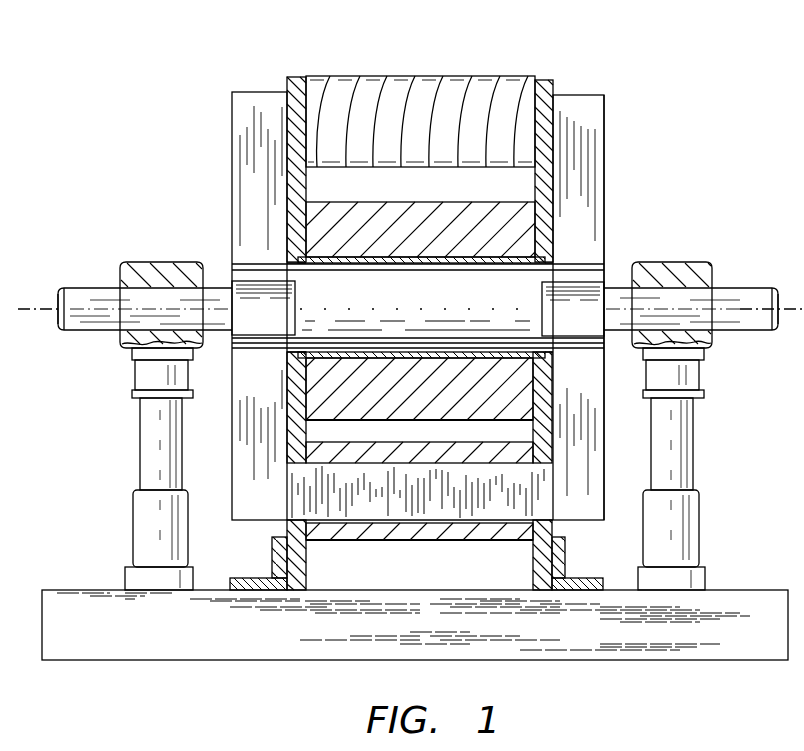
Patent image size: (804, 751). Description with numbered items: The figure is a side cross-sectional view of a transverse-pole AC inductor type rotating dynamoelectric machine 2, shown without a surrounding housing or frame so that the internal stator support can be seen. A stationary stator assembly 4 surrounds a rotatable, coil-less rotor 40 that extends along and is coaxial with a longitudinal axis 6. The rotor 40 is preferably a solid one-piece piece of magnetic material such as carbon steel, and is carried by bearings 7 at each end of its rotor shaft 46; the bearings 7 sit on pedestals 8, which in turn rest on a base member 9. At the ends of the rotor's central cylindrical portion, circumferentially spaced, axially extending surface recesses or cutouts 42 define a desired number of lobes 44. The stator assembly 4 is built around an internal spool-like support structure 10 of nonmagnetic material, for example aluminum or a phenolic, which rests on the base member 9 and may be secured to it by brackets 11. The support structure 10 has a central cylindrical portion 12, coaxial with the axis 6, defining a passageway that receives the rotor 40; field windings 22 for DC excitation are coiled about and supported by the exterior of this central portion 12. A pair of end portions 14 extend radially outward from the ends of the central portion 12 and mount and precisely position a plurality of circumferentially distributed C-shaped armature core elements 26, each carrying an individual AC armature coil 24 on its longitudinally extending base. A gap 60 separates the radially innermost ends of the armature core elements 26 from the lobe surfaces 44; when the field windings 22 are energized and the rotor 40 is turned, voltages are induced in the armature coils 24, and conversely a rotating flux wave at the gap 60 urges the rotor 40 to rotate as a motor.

The machine 2 is at (728, 194).
The stator assembly 4 is at (612, 219).
The longitudinal axis 6 is at (32, 308).
The bearings 7 is at (129, 263).
The pedestals 8 is at (152, 428).
The base member 9 is at (158, 650).
The spool-like support structure 10 is at (568, 83).
The brackets 11 is at (246, 576).
The central cylindrical portion 12 is at (291, 261).
The end portions 14 is at (548, 176).
The field windings 22 is at (368, 221).
The armature coil 24 is at (403, 92).
The armature core elements 26 is at (258, 127).
The rotor 40 is at (428, 276).
The surface recesses or cutouts 42 is at (586, 295).
The lobes 44 is at (612, 340).
The rotor shaft 46 is at (86, 318).
The gap 60 is at (229, 264).